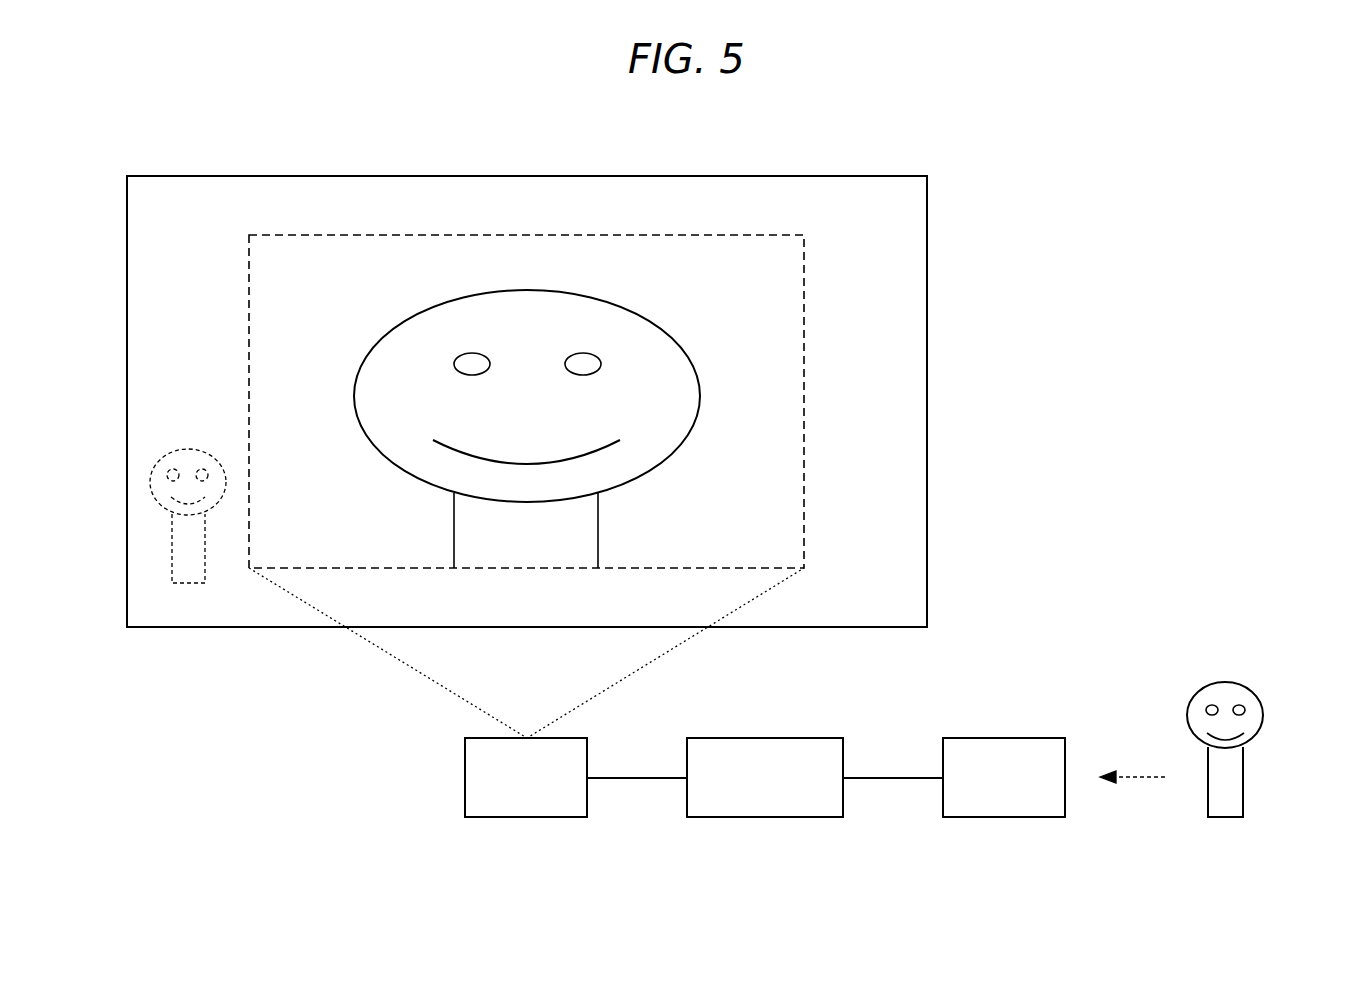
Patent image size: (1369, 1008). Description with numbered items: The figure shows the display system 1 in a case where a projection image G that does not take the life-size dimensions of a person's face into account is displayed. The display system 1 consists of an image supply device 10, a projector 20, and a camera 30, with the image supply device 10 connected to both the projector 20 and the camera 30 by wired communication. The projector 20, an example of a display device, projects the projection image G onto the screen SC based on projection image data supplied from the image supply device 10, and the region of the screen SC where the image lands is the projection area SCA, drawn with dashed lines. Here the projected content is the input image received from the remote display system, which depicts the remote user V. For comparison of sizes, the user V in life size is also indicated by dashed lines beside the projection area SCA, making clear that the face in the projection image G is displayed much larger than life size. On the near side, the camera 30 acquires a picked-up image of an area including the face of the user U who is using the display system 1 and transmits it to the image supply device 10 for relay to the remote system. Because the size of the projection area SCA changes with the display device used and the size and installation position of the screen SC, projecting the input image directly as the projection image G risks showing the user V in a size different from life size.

The display system 1 is at (1054, 134).
The screen SC is at (928, 220).
The projection area SCA is at (805, 419).
The projection image G is at (770, 483).
The user V is at (150, 486).
The projector 20 is at (528, 818).
The image supply device 10 is at (773, 818).
The camera 30 is at (1018, 818).
The user U is at (1265, 718).